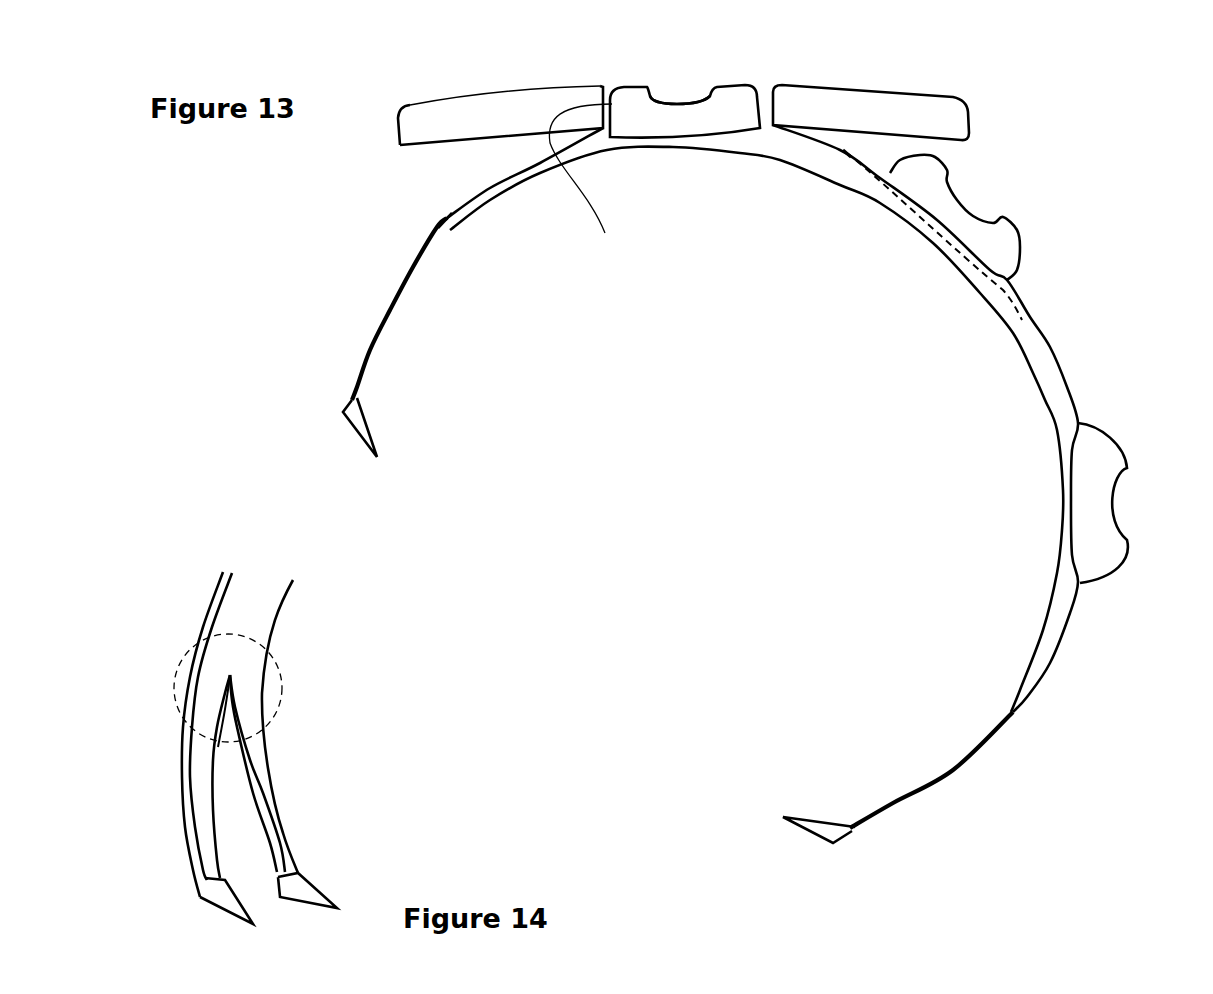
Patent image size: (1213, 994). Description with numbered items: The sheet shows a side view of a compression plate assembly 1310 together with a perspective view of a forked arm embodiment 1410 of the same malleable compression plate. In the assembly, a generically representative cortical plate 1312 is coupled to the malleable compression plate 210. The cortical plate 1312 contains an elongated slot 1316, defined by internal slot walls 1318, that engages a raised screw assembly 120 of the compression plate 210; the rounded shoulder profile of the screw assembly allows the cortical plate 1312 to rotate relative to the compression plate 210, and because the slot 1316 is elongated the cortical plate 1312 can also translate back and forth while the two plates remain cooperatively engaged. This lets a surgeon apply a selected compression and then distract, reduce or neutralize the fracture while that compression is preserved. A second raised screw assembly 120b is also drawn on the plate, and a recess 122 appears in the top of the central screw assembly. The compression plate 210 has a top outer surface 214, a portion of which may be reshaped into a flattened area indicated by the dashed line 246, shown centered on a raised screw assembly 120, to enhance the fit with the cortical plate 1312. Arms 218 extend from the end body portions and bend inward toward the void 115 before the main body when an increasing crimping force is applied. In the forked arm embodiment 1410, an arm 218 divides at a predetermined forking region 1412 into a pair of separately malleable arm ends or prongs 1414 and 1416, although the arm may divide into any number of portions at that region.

In FIG. 13, the void 115 is at (755, 427).
In FIG. 13, the screw assembly 120 is at (708, 127).
In FIG. 13, the pad 120b is at (1027, 247).
In FIG. 13, the notch 122 is at (677, 99).
In FIG. 13, the malleable compression plate 210 is at (1063, 353).
In FIG. 13, the top outer surface 214 is at (1053, 337).
In FIG. 13, the arm 218 is at (950, 768).
In FIG. 14, the arm 218 is at (263, 622).
In FIG. 13, the flattened surface portion 246 is at (867, 173).
In FIG. 13, the compression plate assembly 1310 is at (976, 56).
In FIG. 13, the cortical plate 1312 is at (415, 105).
In FIG. 13, the elongated slot 1316 is at (760, 84).
In FIG. 13, the internal slot walls 1318 is at (605, 233).
In FIG. 14, the forked arm embodiment 1410 is at (268, 748).
In FIG. 14, the forking region 1412 is at (185, 658).
In FIG. 14, the arm end prong 1414 is at (183, 800).
In FIG. 14, the arm end prong 1416 is at (277, 808).